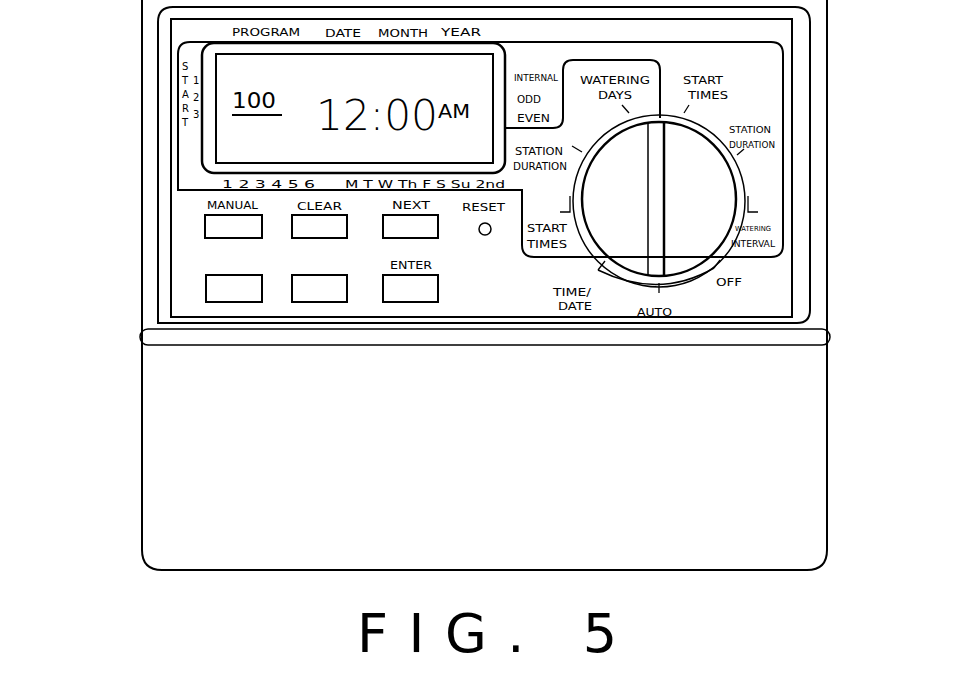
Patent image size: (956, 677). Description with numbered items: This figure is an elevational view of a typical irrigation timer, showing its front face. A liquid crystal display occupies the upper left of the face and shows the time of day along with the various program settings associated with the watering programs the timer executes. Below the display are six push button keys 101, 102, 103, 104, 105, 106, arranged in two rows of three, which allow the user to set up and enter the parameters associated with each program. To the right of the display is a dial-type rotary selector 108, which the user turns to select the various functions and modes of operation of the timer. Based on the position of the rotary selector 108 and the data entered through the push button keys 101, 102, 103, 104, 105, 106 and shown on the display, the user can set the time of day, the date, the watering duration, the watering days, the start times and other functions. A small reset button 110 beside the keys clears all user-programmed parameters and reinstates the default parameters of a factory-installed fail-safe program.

The push button key 101 is at (205, 222).
The push button key 102 is at (291, 236).
The push button key 103 is at (440, 227).
The push button key 104 is at (223, 302).
The push button key 105 is at (315, 302).
The push button key 106 is at (402, 302).
The dial-type rotary selector 108 is at (670, 160).
The reset button 110 is at (491, 234).